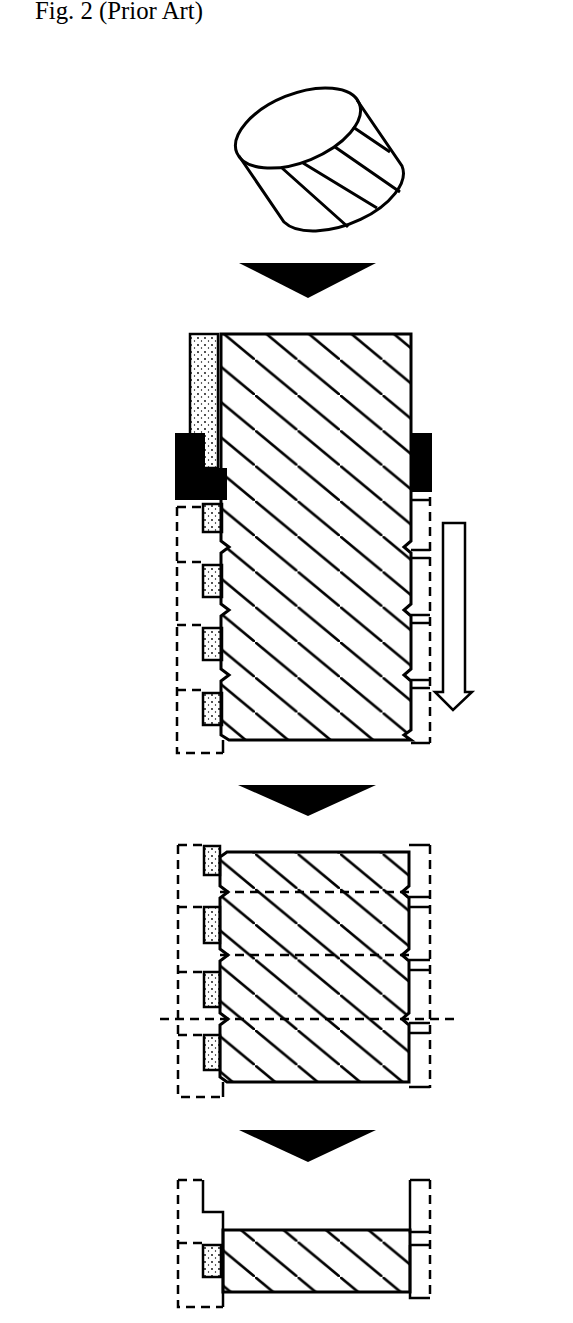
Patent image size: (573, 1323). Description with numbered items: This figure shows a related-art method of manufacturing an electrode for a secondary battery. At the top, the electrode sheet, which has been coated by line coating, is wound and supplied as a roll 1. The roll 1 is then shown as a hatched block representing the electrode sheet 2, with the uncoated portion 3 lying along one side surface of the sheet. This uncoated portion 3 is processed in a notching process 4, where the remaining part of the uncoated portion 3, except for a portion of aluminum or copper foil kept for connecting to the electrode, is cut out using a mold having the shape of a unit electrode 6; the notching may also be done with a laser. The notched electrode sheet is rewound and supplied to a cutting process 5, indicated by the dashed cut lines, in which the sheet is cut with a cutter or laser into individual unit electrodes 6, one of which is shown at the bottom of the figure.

The roll 1 is at (259, 143).
The resin block 2 is at (412, 371).
The uncoated portion 3 is at (200, 370).
The notching process 4 is at (175, 475).
The cutting process 5 is at (212, 1019).
The unit electrode 6 is at (225, 1232).